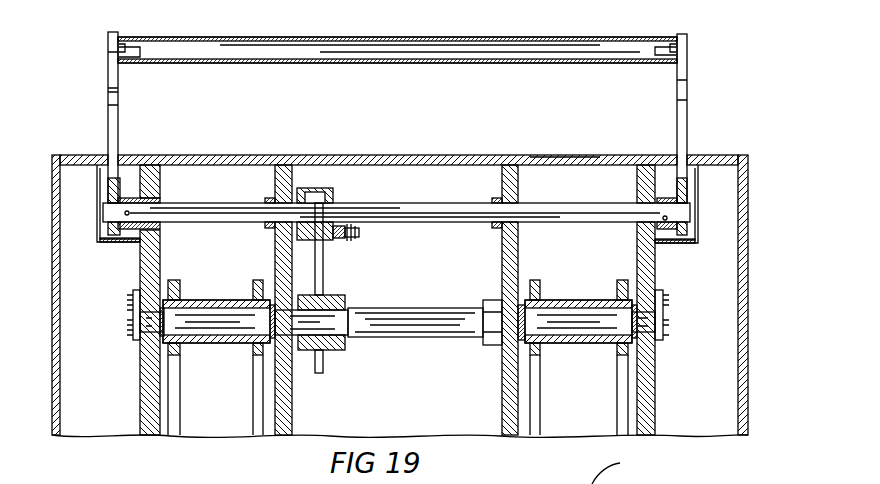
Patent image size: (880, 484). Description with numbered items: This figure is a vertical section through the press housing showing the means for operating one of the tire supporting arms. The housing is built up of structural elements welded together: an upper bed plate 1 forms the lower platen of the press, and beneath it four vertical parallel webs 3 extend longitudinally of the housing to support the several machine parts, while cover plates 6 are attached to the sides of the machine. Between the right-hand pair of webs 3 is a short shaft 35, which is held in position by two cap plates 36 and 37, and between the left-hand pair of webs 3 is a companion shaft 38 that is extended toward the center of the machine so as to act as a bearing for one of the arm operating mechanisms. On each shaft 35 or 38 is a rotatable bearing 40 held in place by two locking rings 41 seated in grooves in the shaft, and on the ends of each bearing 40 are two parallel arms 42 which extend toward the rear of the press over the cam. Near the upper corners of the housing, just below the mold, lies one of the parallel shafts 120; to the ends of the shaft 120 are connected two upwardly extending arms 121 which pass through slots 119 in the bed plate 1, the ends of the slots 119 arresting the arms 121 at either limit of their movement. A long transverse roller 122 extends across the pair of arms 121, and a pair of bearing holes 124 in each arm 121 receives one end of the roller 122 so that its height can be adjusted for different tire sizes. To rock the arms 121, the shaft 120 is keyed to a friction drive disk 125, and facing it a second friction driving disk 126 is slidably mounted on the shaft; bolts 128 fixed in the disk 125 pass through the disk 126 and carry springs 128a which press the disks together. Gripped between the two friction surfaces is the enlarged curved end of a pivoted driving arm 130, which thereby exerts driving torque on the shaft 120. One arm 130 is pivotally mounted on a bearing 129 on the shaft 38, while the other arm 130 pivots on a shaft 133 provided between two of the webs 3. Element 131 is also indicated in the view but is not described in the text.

The upper bed plate 1 is at (552, 157).
The vertical parallel webs 3 is at (140, 393).
The cover plates 6 is at (52, 378).
The short shaft 35 is at (582, 306).
The cap plate 36 is at (127, 320).
The cap plate 37 is at (492, 348).
The companion shaft 38 is at (218, 305).
The rotatable bearing 40 is at (242, 298).
The locking rings 41 is at (266, 350).
The parallel arms 42 is at (175, 290).
The slots 119 is at (118, 158).
The parallel shafts 120 is at (416, 222).
The upwardly extending arms 121 is at (118, 142).
The transverse roller 122 is at (318, 63).
The bearing holes 124 is at (118, 88).
The friction drive disk 125 is at (318, 190).
The second friction driving disk 126 is at (338, 240).
The bolts 128 is at (323, 242).
The springs 128a is at (348, 228).
The bearing 129 is at (312, 350).
The pivoted driving arm 130 is at (323, 363).
The element of adjacent figure 131 is at (617, 483).
The shaft 133 is at (425, 337).